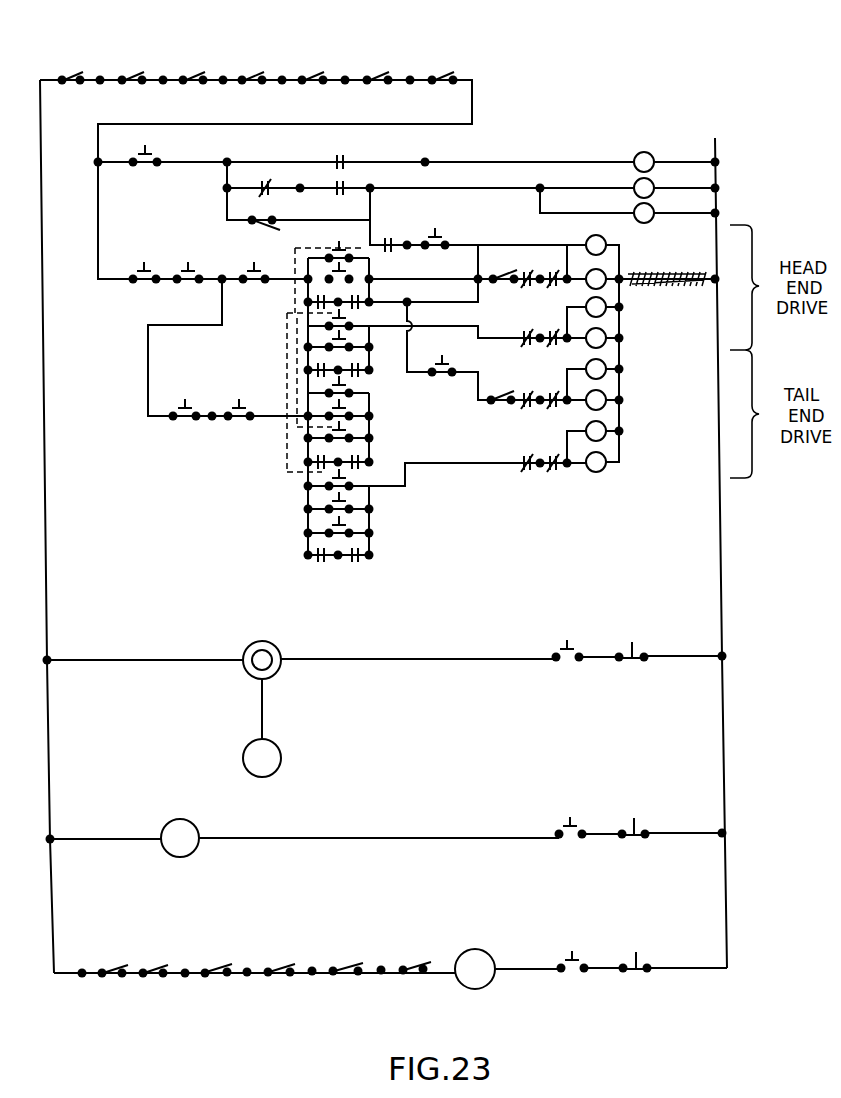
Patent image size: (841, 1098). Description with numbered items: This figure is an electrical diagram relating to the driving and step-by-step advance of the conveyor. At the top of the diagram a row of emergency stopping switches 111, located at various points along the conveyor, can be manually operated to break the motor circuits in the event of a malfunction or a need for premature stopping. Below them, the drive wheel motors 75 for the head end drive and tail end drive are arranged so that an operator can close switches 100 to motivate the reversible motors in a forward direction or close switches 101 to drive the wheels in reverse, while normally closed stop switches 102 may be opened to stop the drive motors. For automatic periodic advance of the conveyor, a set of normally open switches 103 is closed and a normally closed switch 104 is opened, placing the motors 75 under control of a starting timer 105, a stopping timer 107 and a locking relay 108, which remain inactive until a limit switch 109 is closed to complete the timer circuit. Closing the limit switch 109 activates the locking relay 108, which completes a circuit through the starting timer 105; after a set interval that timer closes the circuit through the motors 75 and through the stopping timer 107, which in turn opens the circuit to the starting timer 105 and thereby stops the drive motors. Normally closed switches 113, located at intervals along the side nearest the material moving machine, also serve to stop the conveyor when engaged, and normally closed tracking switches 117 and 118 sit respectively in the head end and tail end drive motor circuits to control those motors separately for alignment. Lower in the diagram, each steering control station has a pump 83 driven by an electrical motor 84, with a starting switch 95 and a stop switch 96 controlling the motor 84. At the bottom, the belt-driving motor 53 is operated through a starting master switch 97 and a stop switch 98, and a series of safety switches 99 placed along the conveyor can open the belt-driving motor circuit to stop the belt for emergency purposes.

The emergency stopping switches 111 is at (127, 73).
The normally open switches 103 is at (148, 168).
The limit switch 109 is at (265, 229).
The normally closed switch 104 is at (140, 292).
The normally closed stop switches 102 is at (190, 285).
The switches 100 is at (342, 250).
The switches 101 is at (330, 318).
The tracking switch 117 is at (506, 282).
The tracking switch 118 is at (502, 403).
The normally closed switches 113 is at (640, 287).
The drive wheel motors 75 is at (642, 338).
The stopping timer 107 is at (634, 166).
The locking relay 108 is at (652, 194).
The starting timer 105 is at (651, 220).
The electrical motor 84 is at (279, 650).
The pump 83 is at (281, 757).
The starting switch 95 is at (567, 640).
The stop switch 96 is at (632, 642).
The belt-driving motor 53 is at (462, 950).
The starting master switch 97 is at (572, 956).
The stop switch 98 is at (636, 952).
The safety switches 99 is at (92, 978).